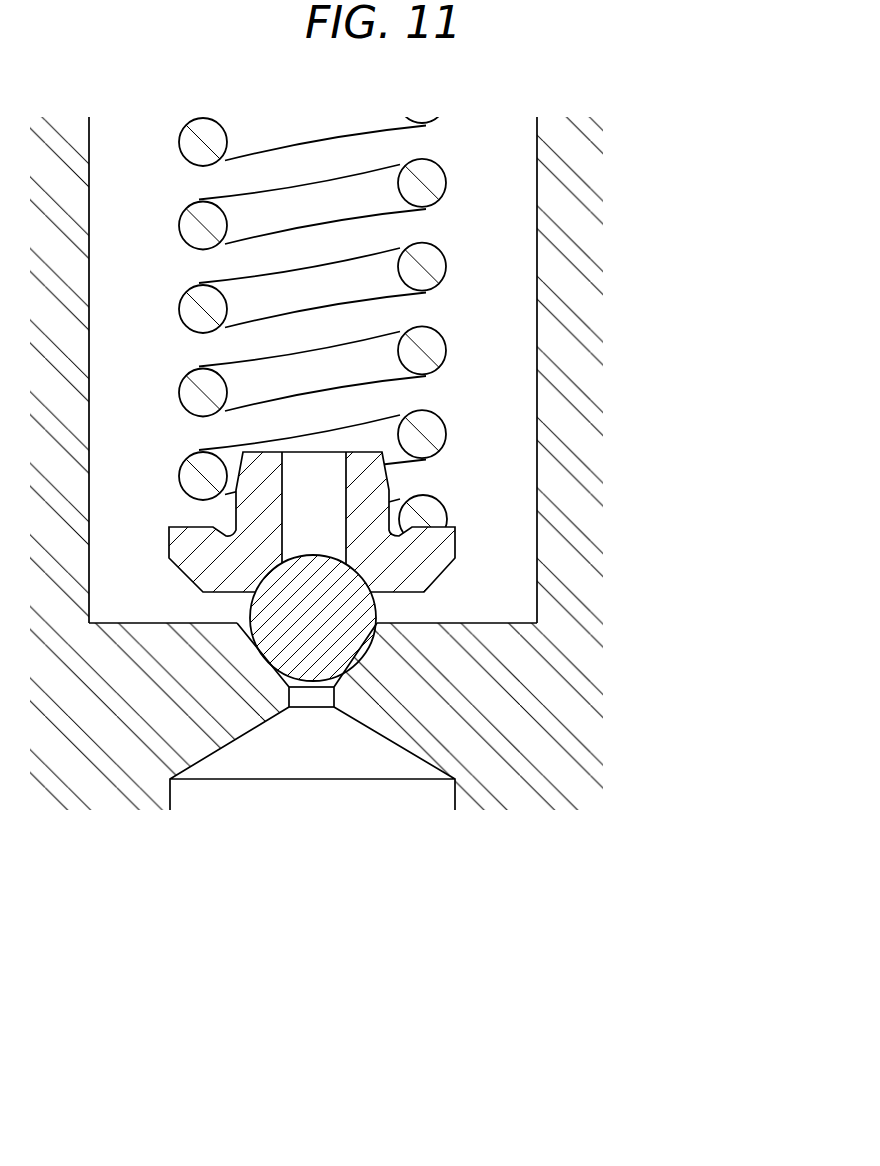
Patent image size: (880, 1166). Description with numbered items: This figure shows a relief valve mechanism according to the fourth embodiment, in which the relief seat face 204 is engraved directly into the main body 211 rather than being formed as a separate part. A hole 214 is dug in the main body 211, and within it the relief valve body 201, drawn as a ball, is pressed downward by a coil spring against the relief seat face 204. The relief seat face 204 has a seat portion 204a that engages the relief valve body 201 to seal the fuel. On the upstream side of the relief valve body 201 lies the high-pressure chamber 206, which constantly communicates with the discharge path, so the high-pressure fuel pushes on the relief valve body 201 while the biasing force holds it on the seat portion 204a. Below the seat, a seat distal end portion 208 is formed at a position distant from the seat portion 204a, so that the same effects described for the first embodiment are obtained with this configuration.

The relief valve body 201 is at (317, 633).
The relief seat face 204 is at (380, 635).
The seat portion 204a is at (357, 665).
The high-pressure chamber 206 is at (425, 352).
The seat distal end portion 208 is at (330, 688).
The main body 211 is at (559, 242).
The hole 214 is at (486, 187).